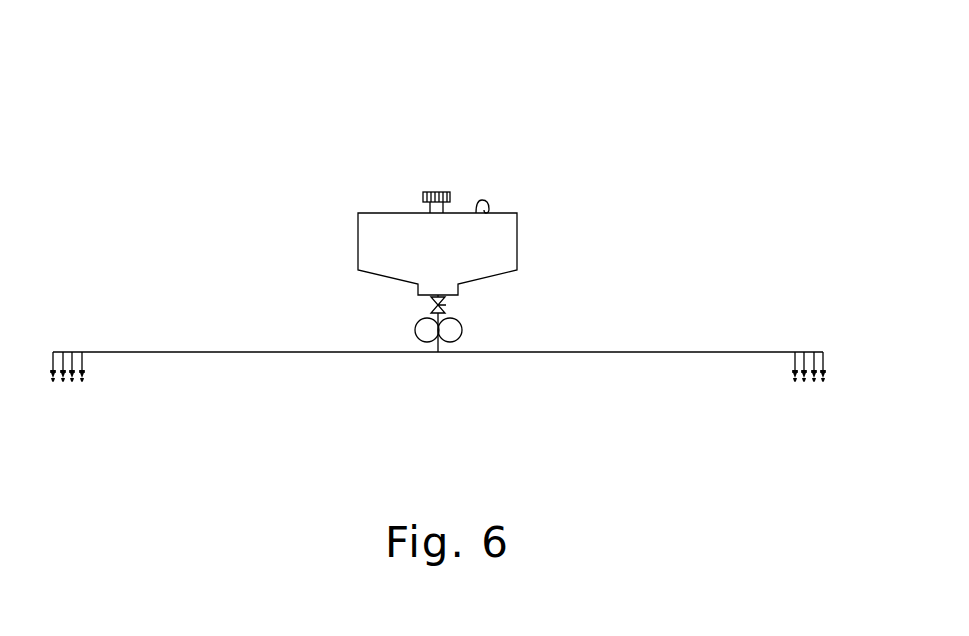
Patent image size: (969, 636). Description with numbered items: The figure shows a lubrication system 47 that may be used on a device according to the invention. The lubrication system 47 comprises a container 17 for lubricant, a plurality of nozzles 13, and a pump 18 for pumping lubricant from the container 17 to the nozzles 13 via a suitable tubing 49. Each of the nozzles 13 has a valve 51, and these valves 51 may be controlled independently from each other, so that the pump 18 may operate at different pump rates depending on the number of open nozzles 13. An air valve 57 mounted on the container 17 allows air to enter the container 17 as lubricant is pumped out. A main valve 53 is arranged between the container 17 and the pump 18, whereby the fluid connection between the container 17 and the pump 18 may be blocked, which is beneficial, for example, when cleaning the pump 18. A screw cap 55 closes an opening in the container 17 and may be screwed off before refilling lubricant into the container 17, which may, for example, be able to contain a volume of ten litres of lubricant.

The nozzles 13 is at (65, 452).
The container 17 is at (420, 253).
The pump 18 is at (428, 333).
The lubrication system 47 is at (612, 163).
The tubing 49 is at (257, 352).
The valve 51 is at (87, 373).
The main valve 53 is at (447, 303).
The screw cap 55 is at (448, 190).
The air valve 57 is at (490, 207).